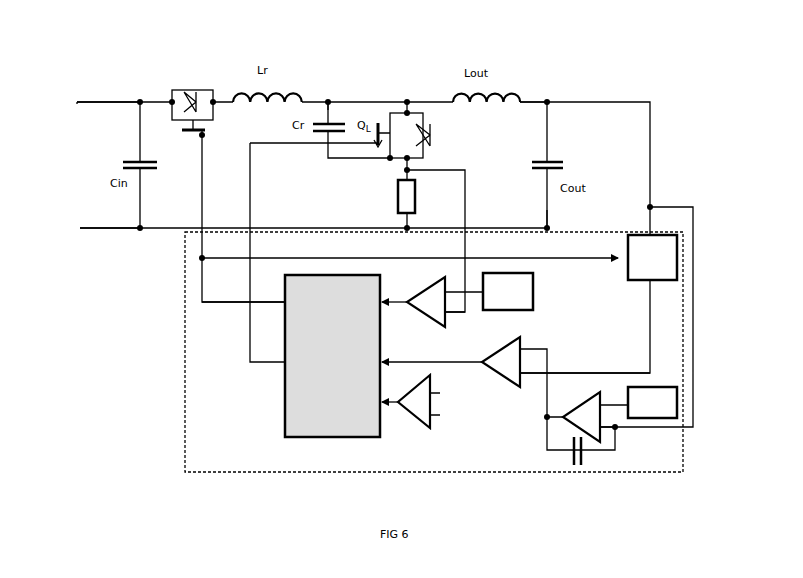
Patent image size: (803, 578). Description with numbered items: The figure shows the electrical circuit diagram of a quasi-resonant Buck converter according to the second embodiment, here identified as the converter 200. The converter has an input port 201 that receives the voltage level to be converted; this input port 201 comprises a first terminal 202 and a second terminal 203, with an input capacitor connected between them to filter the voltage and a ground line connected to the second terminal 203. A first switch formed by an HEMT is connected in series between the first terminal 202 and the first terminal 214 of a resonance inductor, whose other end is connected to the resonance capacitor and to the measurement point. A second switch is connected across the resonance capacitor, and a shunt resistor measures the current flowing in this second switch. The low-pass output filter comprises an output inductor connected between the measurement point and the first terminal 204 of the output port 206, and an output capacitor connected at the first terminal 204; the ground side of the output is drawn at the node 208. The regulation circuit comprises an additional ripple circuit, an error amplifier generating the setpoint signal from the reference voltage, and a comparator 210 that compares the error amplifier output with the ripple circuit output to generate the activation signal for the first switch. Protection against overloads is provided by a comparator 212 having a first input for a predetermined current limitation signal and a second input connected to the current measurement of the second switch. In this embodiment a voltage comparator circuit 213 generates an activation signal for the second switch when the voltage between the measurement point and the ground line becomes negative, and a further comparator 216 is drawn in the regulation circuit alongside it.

The input terminal 200 is at (135, 100).
The input port 201 is at (78, 160).
The first terminal 202 is at (206, 306).
The second terminal 203 is at (283, 395).
The first terminal 204 is at (549, 100).
The output port 206 is at (137, 232).
The output ground node 208 is at (555, 225).
The comparator 210 is at (185, 352).
The comparator 212 is at (428, 285).
The voltage comparator circuit 213 is at (420, 428).
The first terminal 214 is at (215, 89).
The output voltage comparator 216 is at (497, 383).